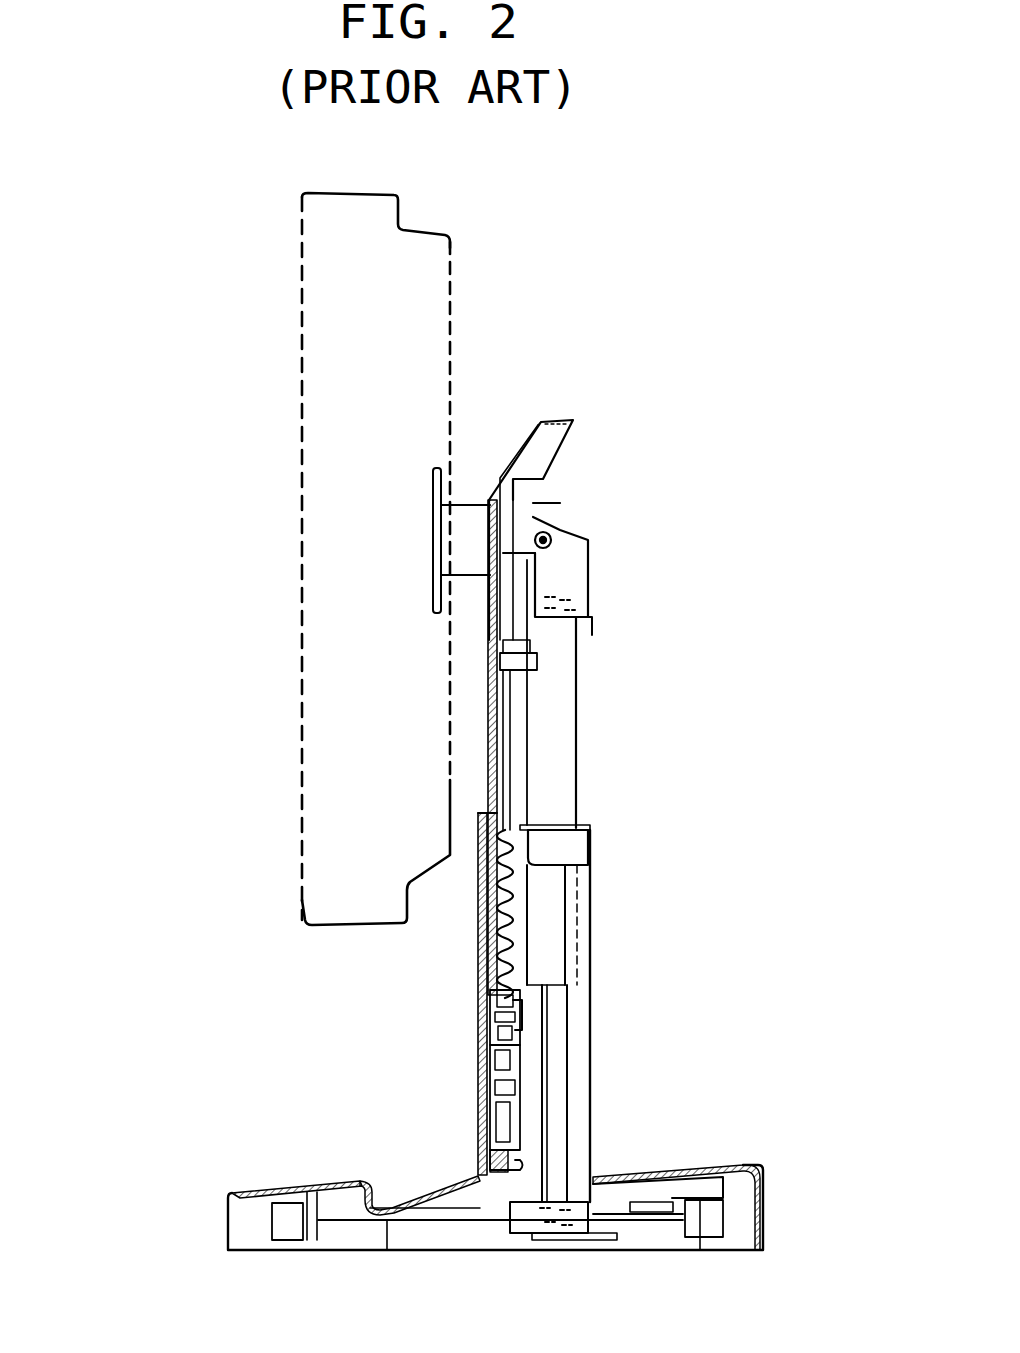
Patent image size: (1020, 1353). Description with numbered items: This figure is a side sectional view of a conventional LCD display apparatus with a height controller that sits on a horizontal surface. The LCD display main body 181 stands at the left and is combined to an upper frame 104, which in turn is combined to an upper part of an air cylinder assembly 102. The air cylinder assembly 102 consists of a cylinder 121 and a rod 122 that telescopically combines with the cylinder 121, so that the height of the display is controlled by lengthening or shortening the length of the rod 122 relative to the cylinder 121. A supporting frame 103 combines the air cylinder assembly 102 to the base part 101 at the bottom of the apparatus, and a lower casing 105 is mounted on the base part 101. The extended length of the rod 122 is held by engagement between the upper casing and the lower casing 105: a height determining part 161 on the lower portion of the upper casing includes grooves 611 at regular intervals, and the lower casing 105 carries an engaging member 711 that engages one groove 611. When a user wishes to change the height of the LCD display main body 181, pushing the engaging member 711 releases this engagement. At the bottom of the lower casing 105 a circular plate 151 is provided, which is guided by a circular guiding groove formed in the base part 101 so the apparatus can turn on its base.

The LCD display main body 181 is at (305, 717).
The upper frame 104 is at (588, 577).
The cylinder 121 is at (562, 698).
The air cylinder assembly 102 is at (578, 737).
The supporting frame 103 is at (593, 935).
The rod 122 is at (560, 1095).
The height determining part 161 is at (480, 903).
The lower casing 105 is at (480, 945).
The groove 611 is at (480, 997).
The engaging member 711 is at (480, 1025).
The base part 101 is at (270, 1190).
The circular plate 151 is at (410, 1182).